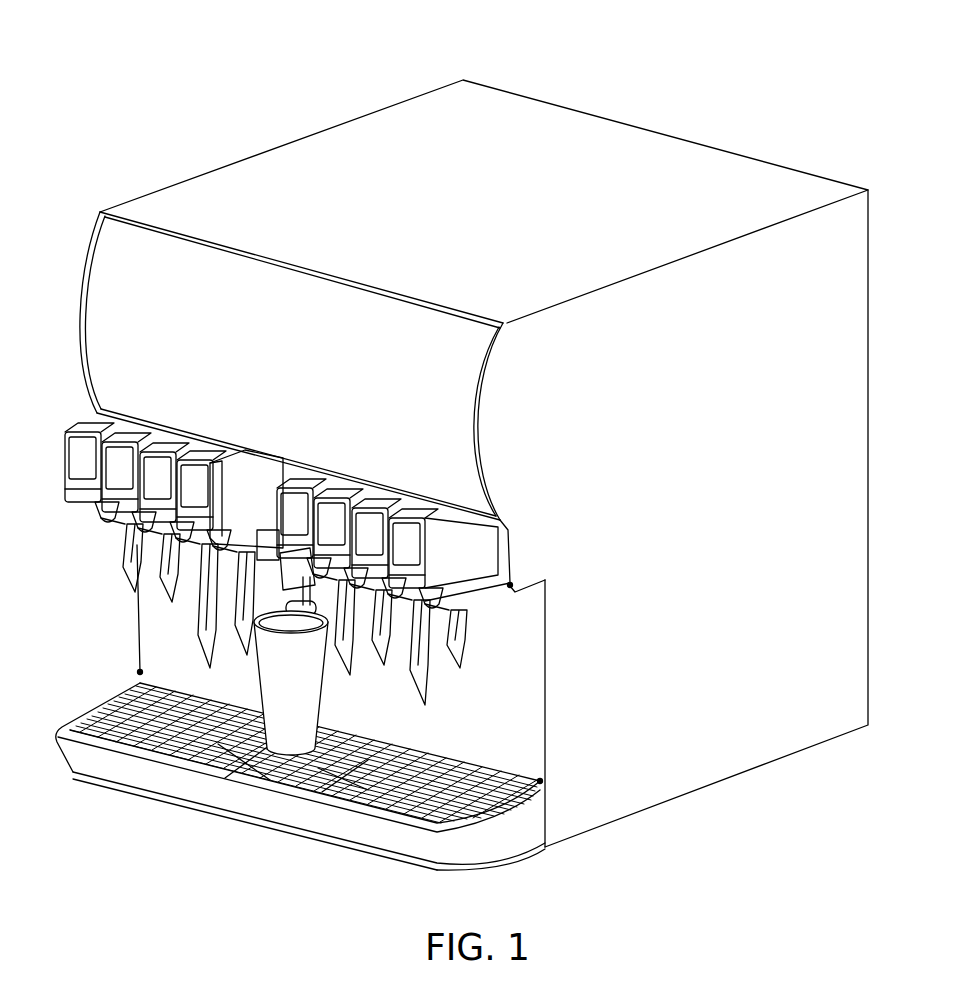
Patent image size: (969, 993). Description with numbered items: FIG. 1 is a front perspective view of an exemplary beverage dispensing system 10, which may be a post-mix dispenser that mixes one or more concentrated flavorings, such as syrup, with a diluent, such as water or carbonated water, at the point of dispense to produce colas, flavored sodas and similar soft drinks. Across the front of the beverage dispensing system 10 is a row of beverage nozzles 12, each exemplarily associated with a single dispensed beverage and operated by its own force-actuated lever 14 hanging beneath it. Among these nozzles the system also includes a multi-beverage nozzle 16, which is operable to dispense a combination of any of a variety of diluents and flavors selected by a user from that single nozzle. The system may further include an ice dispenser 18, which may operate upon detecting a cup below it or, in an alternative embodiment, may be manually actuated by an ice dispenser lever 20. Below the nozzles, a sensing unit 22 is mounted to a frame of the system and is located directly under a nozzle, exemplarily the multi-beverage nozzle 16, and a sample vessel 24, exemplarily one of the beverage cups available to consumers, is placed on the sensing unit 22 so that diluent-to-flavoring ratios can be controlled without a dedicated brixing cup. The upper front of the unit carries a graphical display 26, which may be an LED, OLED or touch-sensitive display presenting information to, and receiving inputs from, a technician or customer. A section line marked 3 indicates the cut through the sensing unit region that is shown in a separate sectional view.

The beverage dispensing system 10 is at (245, 80).
The beverage nozzles 12 is at (143, 536).
The force-actuated lever 14 is at (173, 600).
The multi-beverage nozzle 16 is at (247, 558).
The ice dispenser 18 is at (273, 558).
The ice dispenser lever 20 is at (312, 585).
The sensing unit 22 is at (262, 778).
The sample vessel 24 is at (318, 704).
The graphical display 26 is at (105, 321).
The section line 3- 3 is at (190, 393).